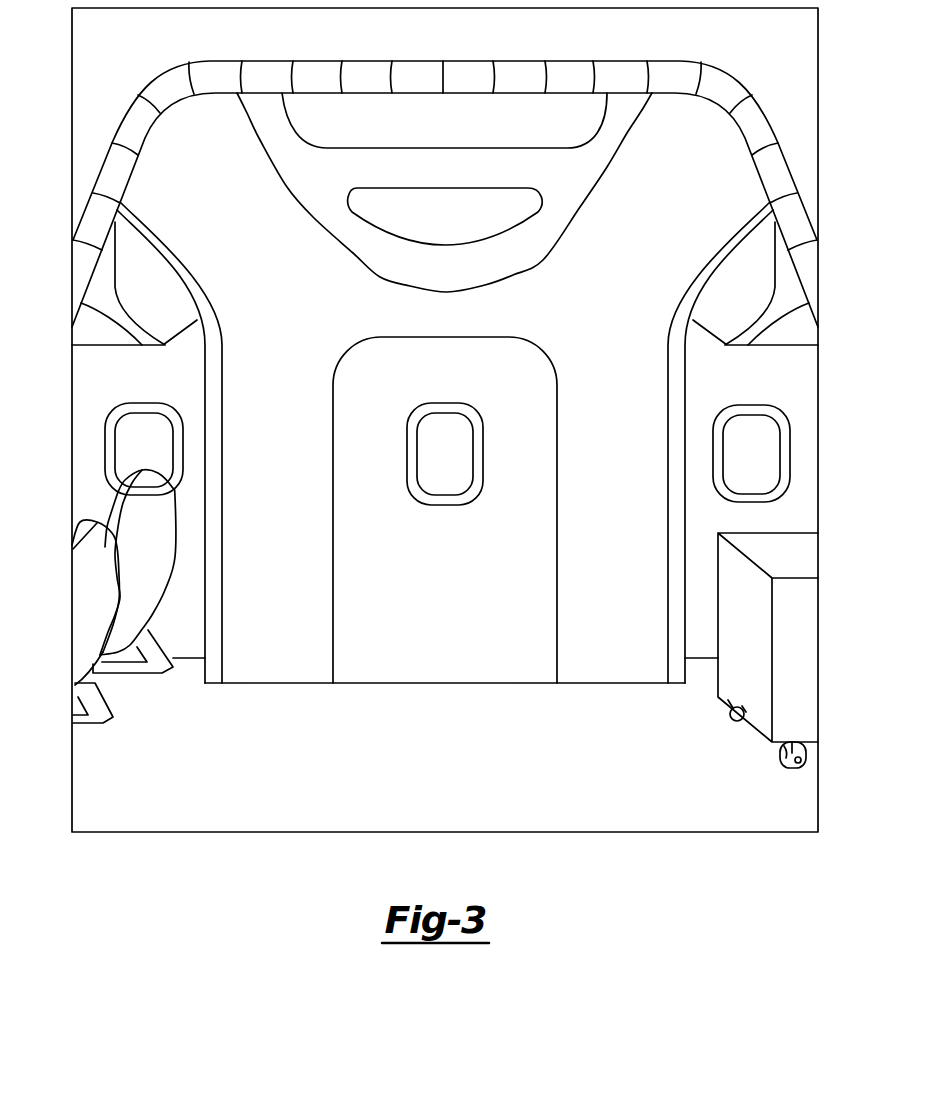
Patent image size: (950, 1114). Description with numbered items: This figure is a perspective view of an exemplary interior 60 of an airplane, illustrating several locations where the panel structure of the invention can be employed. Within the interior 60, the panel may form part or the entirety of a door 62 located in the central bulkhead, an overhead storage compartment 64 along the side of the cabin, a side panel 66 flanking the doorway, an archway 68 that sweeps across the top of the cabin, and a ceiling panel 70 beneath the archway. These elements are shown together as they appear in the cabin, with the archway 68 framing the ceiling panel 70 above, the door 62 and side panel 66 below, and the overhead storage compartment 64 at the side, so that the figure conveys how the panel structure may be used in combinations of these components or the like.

The interior 60 is at (789, 510).
The door 62 is at (442, 586).
The overhead storage compartment 64 is at (98, 335).
The side panel 66 is at (180, 378).
The archway 68 is at (722, 87).
The ceiling panel 70 is at (550, 113).